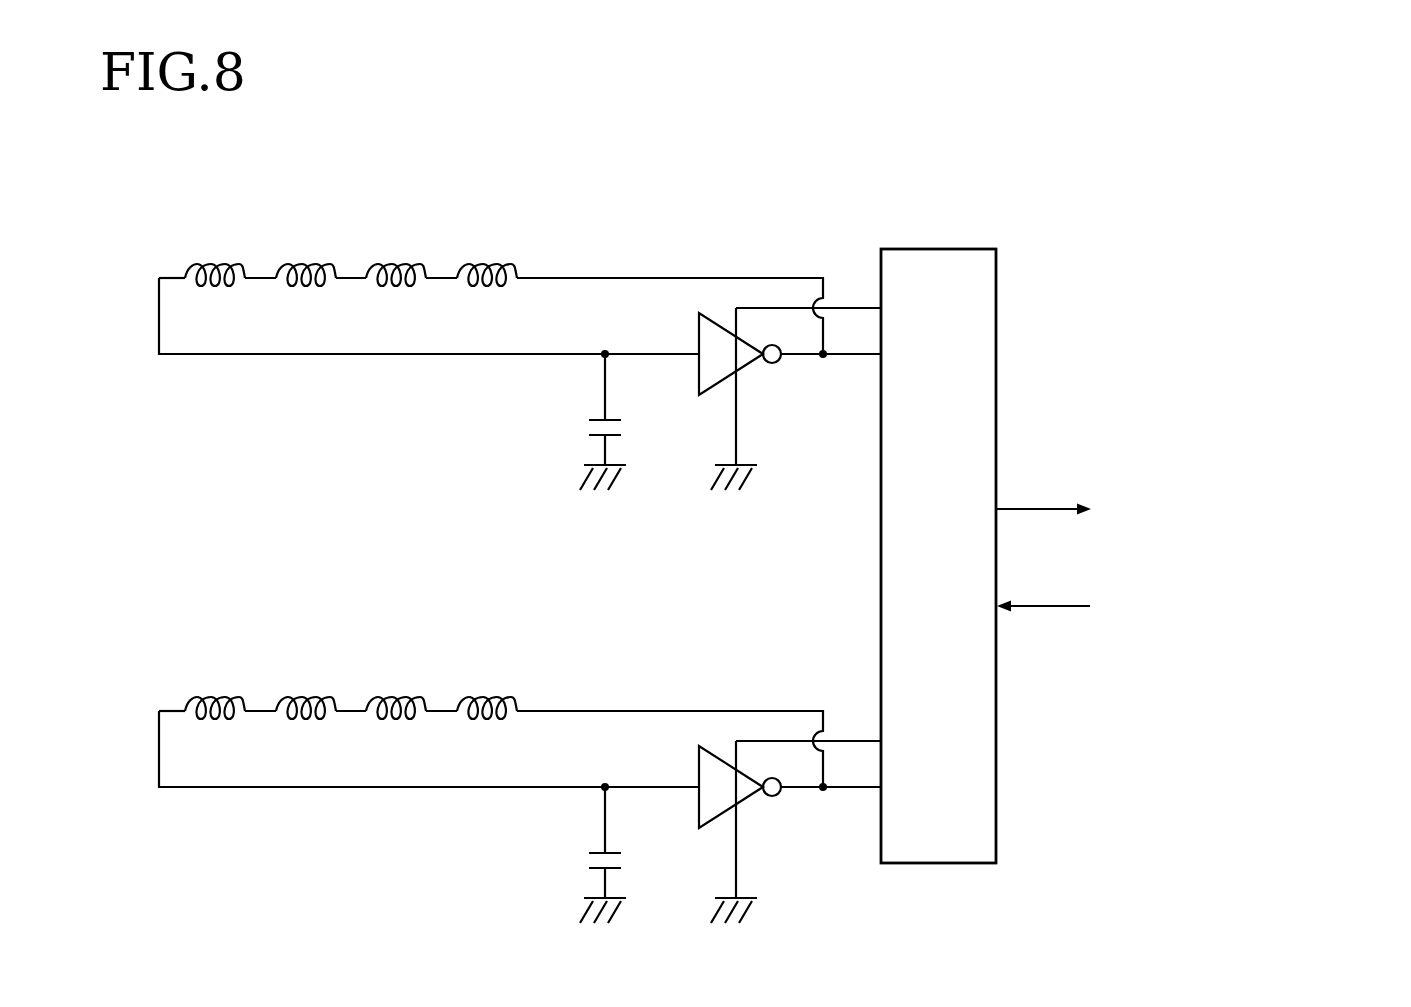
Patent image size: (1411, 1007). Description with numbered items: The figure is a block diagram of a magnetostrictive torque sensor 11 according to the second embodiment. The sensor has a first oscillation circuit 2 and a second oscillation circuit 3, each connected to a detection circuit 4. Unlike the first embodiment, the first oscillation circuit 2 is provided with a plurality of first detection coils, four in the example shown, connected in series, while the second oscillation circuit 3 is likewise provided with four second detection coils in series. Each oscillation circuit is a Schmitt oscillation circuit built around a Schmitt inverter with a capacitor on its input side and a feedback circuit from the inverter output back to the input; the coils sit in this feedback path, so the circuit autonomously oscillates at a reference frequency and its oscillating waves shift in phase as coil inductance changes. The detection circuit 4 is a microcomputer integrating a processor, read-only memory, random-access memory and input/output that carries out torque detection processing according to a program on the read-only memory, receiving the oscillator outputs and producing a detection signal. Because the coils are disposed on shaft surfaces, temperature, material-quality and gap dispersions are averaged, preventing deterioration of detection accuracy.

The magnetostrictive torque sensor 11 is at (595, 198).
The first oscillation circuit 2 is at (448, 393).
The second oscillation circuit 3 is at (447, 825).
The detection circuit 4 is at (957, 249).